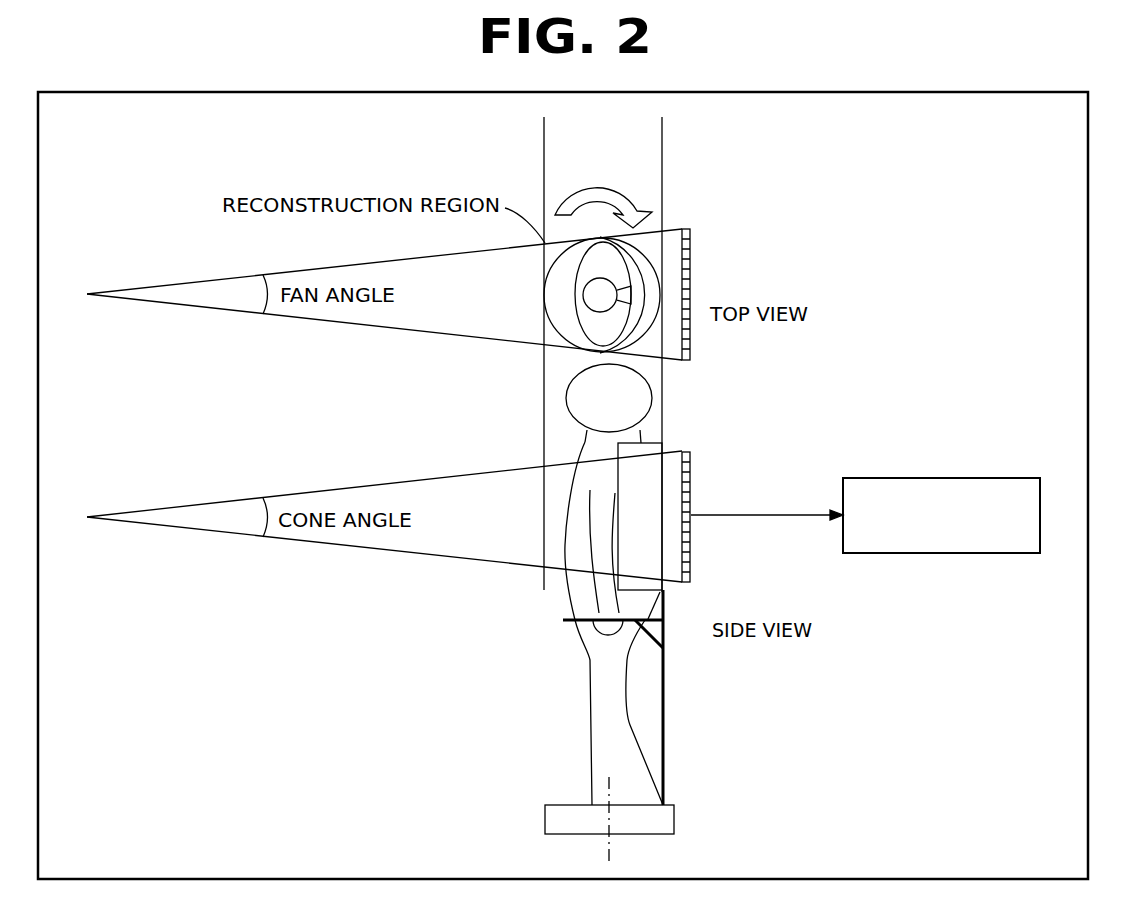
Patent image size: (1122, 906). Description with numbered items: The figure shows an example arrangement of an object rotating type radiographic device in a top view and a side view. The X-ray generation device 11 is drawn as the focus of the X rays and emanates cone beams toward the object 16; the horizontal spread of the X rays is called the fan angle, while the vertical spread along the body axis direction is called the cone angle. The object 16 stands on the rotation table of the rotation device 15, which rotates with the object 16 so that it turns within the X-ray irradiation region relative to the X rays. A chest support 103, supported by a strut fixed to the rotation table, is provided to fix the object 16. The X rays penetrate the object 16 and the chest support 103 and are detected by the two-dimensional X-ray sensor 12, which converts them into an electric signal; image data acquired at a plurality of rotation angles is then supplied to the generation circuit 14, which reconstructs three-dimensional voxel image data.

The X-ray generation device 11 is at (87, 294).
The two-dimensional X-ray sensor 12 is at (690, 248).
The generation circuit 14 is at (942, 478).
The rotation device 15 is at (676, 818).
The object 16 is at (577, 403).
The chest support 103 is at (637, 258).